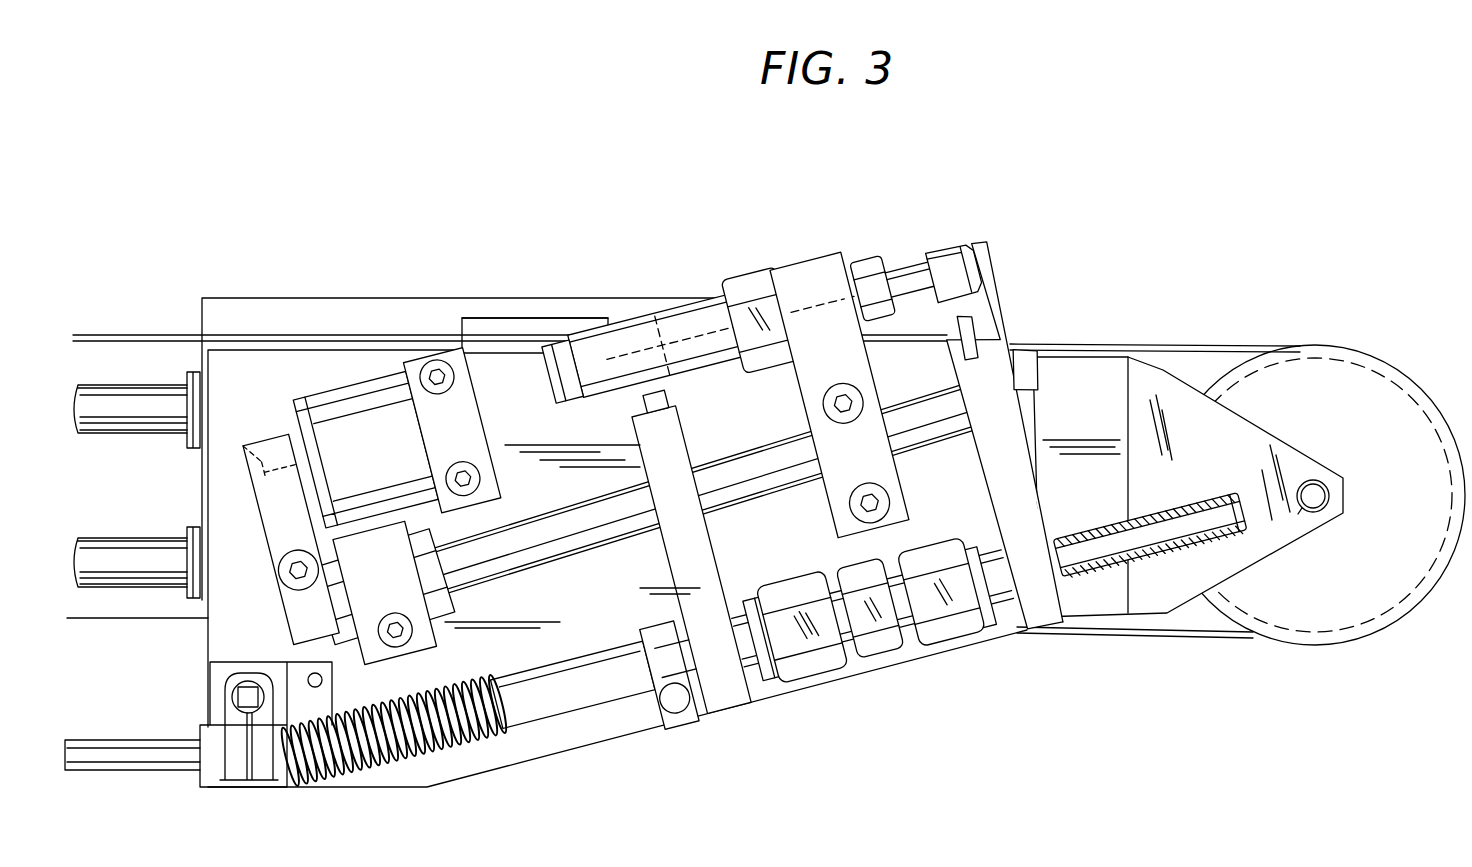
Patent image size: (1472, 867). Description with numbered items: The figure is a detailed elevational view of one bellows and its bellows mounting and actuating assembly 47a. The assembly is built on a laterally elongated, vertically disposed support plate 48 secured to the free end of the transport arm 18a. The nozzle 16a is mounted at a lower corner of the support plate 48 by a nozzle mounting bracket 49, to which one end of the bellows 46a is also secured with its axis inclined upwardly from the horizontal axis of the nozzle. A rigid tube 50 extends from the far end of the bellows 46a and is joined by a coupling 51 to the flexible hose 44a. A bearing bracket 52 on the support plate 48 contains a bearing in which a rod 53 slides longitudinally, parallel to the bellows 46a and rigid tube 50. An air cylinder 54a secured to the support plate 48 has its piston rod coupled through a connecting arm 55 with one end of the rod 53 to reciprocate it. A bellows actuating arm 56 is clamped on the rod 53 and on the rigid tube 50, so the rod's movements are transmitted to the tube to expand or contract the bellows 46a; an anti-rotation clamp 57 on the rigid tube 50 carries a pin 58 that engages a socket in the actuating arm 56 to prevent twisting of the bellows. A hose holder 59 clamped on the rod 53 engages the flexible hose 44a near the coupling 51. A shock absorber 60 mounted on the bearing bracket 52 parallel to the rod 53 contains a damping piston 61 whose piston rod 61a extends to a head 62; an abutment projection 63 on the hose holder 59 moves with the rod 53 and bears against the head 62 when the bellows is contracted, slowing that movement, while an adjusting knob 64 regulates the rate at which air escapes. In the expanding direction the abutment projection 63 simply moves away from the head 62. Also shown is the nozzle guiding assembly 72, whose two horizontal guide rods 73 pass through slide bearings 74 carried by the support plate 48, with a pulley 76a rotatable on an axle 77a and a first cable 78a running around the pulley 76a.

The transport arm 18a is at (268, 313).
The bellows mounting and actuating assembly 47a is at (589, 252).
The first cable 78a is at (1208, 348).
The guide rods 73 is at (135, 384).
The slide bearings 74 is at (189, 526).
The nozzle 16a is at (94, 768).
The nozzle mounting bracket 49 is at (240, 770).
The support plate 48 is at (574, 742).
The pulley 76a is at (1362, 632).
The rod 53 is at (762, 497).
The rigid tube 50 is at (520, 683).
The bellows 46a is at (440, 748).
The air cylinder 54a is at (332, 397).
The connecting arm 55 is at (263, 522).
The damping piston 61 is at (683, 357).
The adjusting knob 64 is at (550, 392).
The shock absorber 60 is at (706, 312).
The bellows actuating arm 56 is at (680, 565).
The pin 58 is at (680, 622).
The anti-rotation clamp 57 is at (640, 675).
The bearing bracket 52 is at (808, 270).
The piston rod 61a is at (907, 287).
The head 62 is at (948, 263).
The coupling 51 is at (888, 653).
The nozzle guiding assembly 72 is at (1151, 332).
The axle 77a is at (1330, 497).
The hose holder 59 is at (1020, 480).
The abutment projection 63 is at (995, 298).
The flexible hose 44a is at (1208, 498).